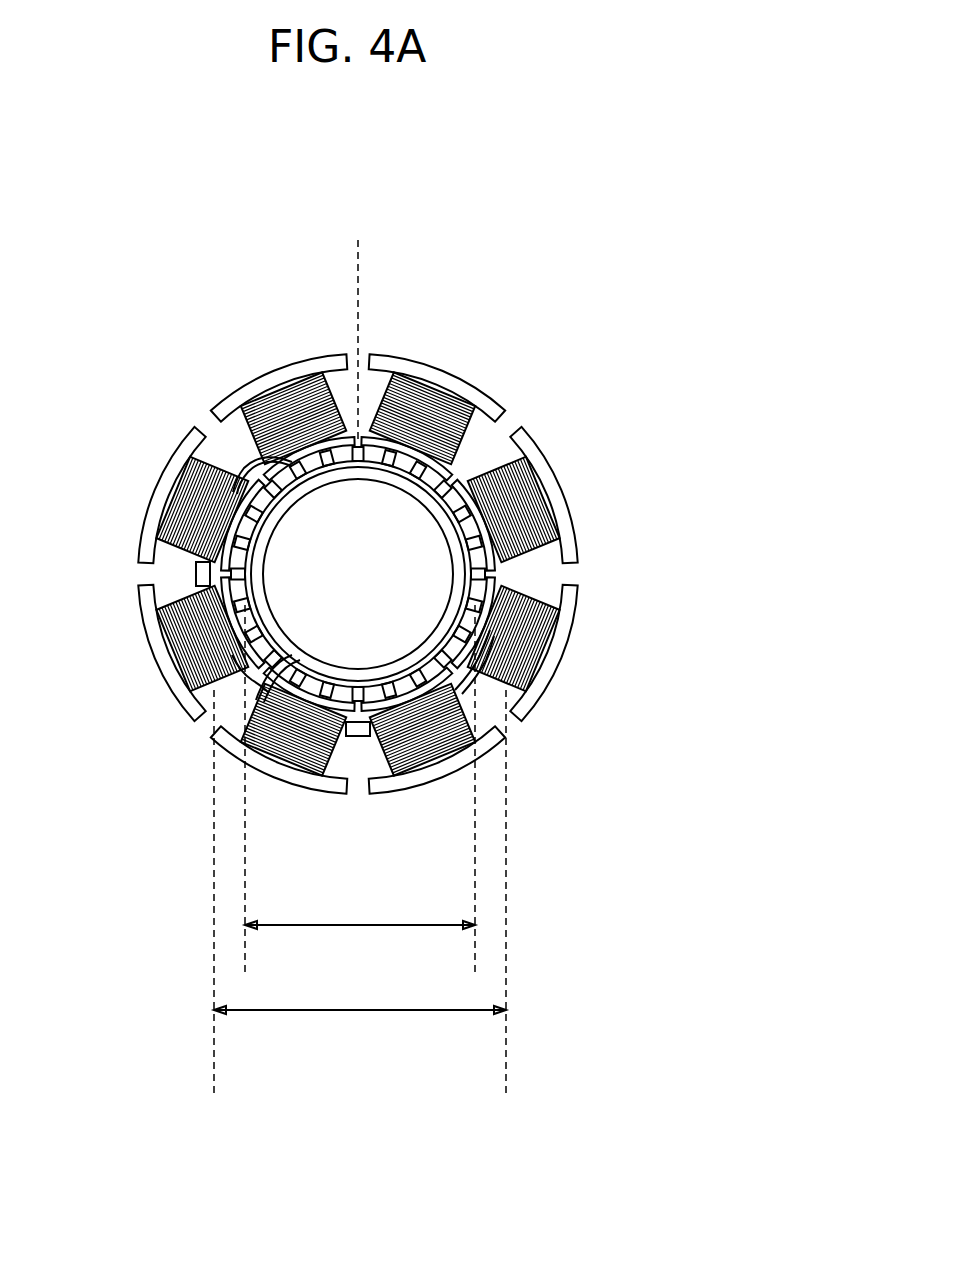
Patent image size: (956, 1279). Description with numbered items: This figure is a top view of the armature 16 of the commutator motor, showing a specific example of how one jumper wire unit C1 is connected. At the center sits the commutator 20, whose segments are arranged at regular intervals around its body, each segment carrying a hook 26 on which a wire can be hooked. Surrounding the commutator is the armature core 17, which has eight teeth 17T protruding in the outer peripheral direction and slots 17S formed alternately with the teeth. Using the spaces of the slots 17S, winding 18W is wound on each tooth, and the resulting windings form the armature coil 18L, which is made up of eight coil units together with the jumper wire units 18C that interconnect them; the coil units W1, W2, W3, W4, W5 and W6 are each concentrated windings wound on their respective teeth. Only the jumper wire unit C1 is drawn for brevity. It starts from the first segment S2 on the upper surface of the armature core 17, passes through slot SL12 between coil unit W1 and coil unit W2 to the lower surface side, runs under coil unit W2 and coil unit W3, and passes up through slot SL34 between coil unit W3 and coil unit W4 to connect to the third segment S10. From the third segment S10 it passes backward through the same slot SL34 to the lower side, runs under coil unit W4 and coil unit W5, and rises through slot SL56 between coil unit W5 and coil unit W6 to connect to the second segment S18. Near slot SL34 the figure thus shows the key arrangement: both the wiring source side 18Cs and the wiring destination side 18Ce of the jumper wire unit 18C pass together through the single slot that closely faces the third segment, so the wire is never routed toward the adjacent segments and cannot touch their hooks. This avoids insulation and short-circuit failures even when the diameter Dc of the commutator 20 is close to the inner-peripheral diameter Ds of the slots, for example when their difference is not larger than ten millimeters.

The armature 16 is at (497, 378).
The armature core 17 is at (450, 378).
The slots 17S is at (167, 572).
The teeth 17T is at (152, 528).
The armature coil 18L is at (183, 268).
The coil winding 18W is at (267, 407).
The jumper wire units 18C is at (240, 465).
The wiring destination side 18Ce is at (243, 670).
The wiring source side 18Cs is at (262, 680).
The commutator 20 is at (415, 532).
The hook 26 is at (460, 510).
The coil unit W1 is at (540, 645).
The coil unit W2 is at (458, 750).
The coil unit W3 is at (262, 748).
The coil unit W4 is at (187, 622).
The coil unit W5 is at (187, 490).
The coil unit W6 is at (285, 393).
The slot SL12 is at (523, 707).
The slot SL34 is at (227, 710).
The slot SL56 is at (213, 448).
The jumper wire unit C1 is at (473, 678).
The first segment S2 is at (452, 595).
The third segment S10 is at (287, 643).
The second segment S18 is at (313, 483).
The diameter of commutator Dc is at (360, 790).
The inner-peripheral diameter of the slots Ds is at (360, 893).